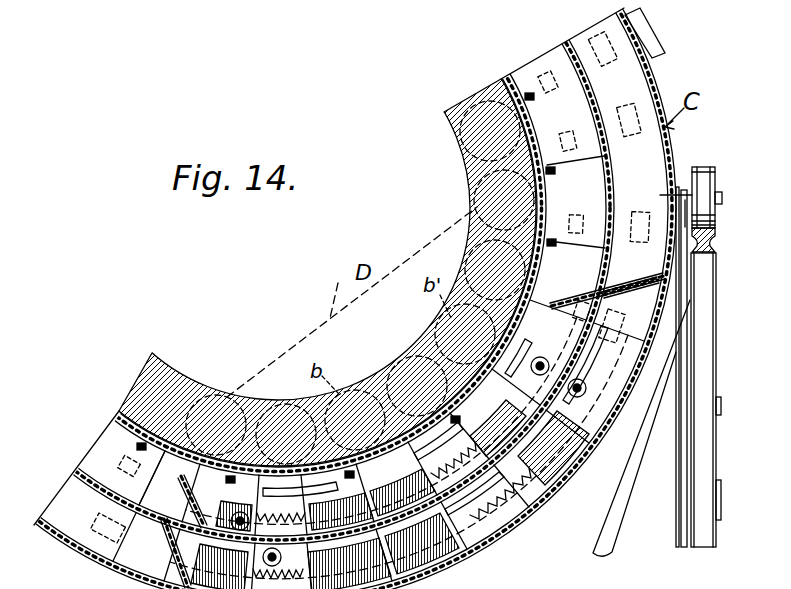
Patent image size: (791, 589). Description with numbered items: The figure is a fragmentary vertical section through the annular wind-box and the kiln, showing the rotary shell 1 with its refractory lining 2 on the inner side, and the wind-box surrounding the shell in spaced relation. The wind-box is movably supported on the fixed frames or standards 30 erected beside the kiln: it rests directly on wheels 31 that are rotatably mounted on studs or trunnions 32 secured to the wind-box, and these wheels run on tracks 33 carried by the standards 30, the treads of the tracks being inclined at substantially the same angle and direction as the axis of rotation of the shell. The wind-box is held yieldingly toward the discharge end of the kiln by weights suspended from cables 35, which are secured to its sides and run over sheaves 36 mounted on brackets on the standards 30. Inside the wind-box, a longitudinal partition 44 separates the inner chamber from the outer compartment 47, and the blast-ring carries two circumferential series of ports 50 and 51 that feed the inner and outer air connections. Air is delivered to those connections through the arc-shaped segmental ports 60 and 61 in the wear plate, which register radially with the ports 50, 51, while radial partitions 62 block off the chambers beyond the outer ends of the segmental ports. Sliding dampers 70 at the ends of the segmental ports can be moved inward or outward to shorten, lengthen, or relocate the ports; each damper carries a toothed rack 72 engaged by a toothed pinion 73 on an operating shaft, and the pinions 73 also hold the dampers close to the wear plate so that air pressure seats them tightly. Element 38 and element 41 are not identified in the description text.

The rotary shell 1 is at (552, 166).
The lining 2 is at (476, 160).
The fixed frames or standards 30 is at (716, 458).
The wheels 31 is at (715, 186).
The studs or trunnions 32 is at (722, 204).
The tracks 33 is at (716, 244).
The cables 35 is at (680, 516).
The sheaves 36 is at (676, 246).
The end plate 38 is at (658, 34).
The bolt 41 is at (555, 245).
The longitudinal partition 44 is at (583, 78).
The outer compartment 47 is at (415, 462).
The ports 50 is at (586, 150).
The ports 51 is at (625, 120).
The segmental port 60 is at (500, 412).
The segmental port 61 is at (556, 514).
The radial partitions 62 is at (575, 300).
The sliding dampers 70 is at (540, 375).
The toothed rack 72 is at (462, 380).
The toothed pinion 73 is at (536, 358).